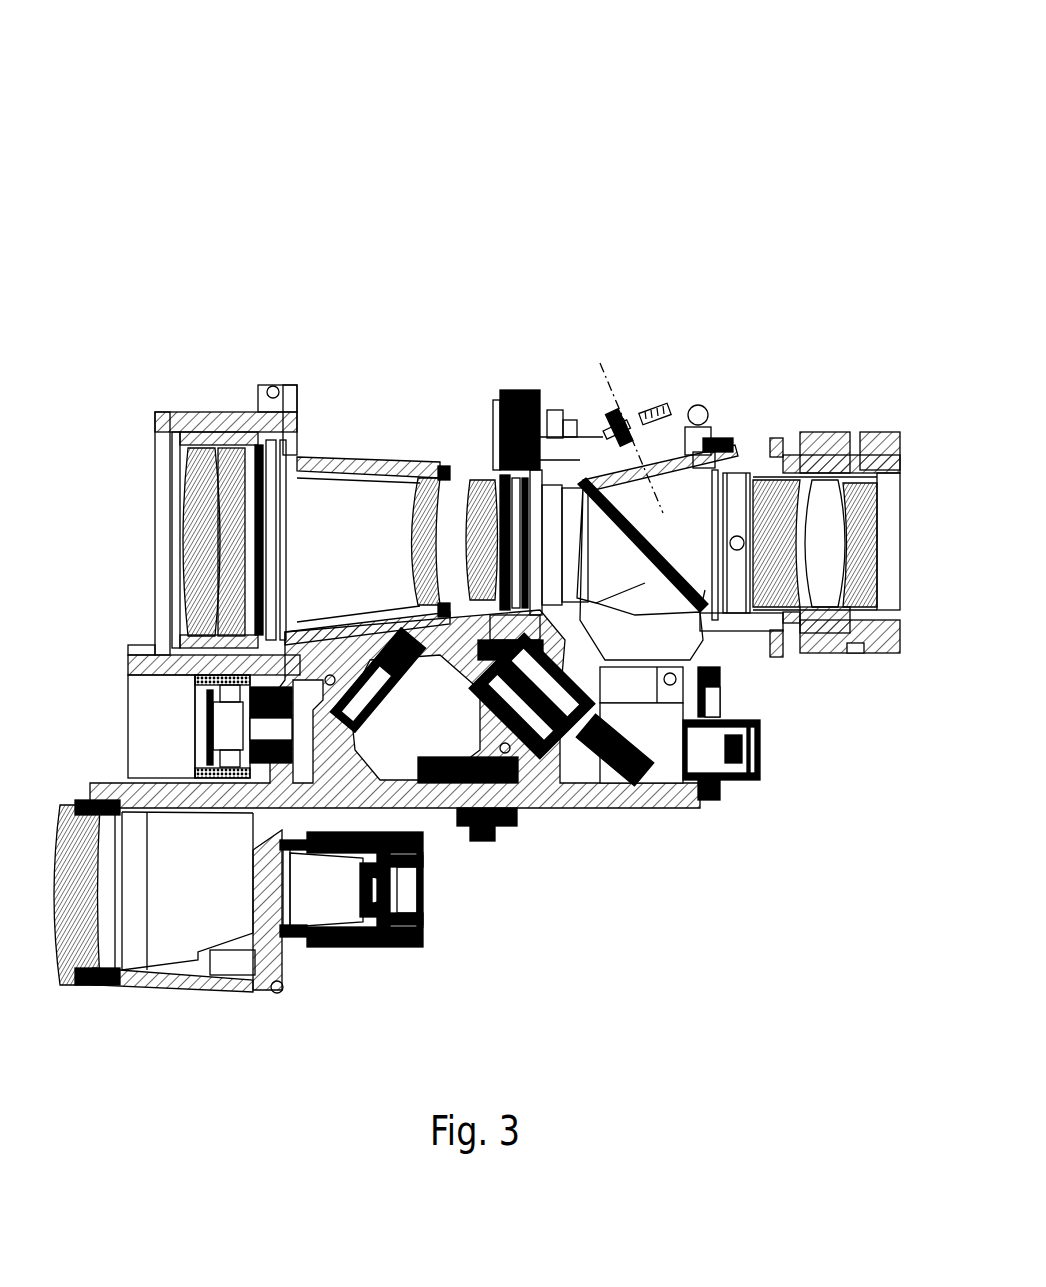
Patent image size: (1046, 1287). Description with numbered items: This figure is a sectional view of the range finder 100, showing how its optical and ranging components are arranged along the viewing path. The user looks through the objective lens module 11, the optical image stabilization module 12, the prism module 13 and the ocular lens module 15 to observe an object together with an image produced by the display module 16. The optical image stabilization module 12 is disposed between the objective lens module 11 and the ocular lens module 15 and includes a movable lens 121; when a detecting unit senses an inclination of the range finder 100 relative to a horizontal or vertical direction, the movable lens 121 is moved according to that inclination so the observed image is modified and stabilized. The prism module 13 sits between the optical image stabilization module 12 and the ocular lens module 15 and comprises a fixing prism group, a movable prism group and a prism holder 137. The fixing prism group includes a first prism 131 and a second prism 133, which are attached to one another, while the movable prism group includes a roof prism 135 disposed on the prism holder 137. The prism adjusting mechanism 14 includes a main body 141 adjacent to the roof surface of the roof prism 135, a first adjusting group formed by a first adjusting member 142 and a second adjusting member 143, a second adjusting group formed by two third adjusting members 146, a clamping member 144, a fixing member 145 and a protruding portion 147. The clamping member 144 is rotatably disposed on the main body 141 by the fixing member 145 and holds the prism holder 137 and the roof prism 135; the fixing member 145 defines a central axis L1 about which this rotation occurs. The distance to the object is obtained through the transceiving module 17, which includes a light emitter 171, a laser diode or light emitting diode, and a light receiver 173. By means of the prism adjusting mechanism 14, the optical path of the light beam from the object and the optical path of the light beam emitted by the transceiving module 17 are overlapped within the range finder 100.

The range finder 100 is at (205, 58).
The objective lens module 11 is at (265, 440).
The optical image stabilization module 12 is at (486, 302).
The movable lens 121 is at (473, 460).
The prism module 13 is at (940, 312).
The first prism 131 is at (850, 453).
The second prism 133 is at (905, 503).
The roof prism 135 is at (790, 450).
The prism holder 137 is at (745, 455).
The prism adjusting mechanism 14 is at (601, 272).
The main body 141 is at (598, 462).
The first adjusting member 142 is at (695, 405).
The second adjusting member 143 is at (713, 433).
The clamping member 144 is at (650, 413).
The fixing member 145 is at (608, 450).
The third adjusting member 146 is at (672, 415).
The protruding portion 147 is at (585, 440).
The ocular lens module 15 is at (840, 635).
The display module 16 is at (250, 590).
The transceiving module 17 is at (855, 812).
The light emitter 171 is at (757, 750).
The light receiver 173 is at (407, 893).
The central axis L1 is at (624, 419).